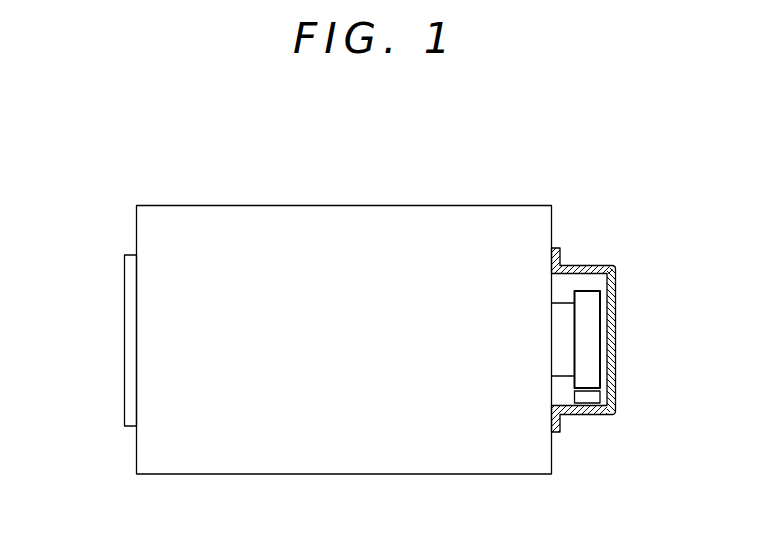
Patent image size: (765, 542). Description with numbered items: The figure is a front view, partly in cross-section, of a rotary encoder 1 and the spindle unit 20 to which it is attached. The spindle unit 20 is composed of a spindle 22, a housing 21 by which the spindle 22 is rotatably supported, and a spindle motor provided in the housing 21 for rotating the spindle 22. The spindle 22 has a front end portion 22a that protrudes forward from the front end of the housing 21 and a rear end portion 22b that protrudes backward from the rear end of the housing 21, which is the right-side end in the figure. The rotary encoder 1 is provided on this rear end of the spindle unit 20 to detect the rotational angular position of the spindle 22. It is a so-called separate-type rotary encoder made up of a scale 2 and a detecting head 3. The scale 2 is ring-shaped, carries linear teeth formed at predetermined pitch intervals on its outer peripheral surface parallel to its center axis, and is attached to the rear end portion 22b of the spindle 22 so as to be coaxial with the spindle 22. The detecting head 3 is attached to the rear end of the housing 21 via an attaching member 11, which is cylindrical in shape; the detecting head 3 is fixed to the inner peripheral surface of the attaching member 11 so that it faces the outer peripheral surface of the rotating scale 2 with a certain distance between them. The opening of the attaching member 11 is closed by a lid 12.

The rotary encoder 1 is at (632, 340).
The scale 2 is at (585, 380).
The detecting head 3 is at (598, 404).
The attaching member 11 is at (632, 340).
The lid 12 is at (616, 280).
The spindle unit 20 is at (306, 315).
The housing 21 is at (483, 212).
The spindle 22 is at (87, 371).
The front end portion 22a is at (125, 417).
The rear end portion 22b is at (555, 363).